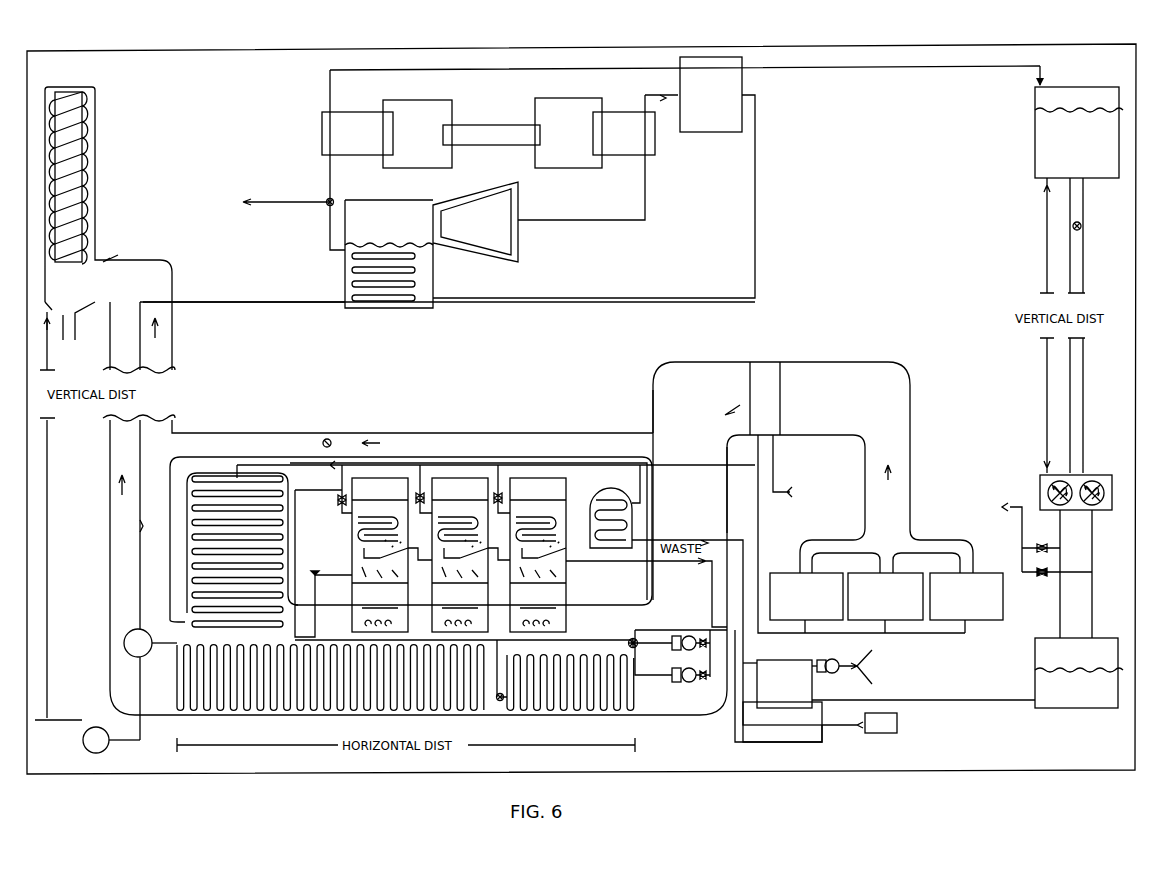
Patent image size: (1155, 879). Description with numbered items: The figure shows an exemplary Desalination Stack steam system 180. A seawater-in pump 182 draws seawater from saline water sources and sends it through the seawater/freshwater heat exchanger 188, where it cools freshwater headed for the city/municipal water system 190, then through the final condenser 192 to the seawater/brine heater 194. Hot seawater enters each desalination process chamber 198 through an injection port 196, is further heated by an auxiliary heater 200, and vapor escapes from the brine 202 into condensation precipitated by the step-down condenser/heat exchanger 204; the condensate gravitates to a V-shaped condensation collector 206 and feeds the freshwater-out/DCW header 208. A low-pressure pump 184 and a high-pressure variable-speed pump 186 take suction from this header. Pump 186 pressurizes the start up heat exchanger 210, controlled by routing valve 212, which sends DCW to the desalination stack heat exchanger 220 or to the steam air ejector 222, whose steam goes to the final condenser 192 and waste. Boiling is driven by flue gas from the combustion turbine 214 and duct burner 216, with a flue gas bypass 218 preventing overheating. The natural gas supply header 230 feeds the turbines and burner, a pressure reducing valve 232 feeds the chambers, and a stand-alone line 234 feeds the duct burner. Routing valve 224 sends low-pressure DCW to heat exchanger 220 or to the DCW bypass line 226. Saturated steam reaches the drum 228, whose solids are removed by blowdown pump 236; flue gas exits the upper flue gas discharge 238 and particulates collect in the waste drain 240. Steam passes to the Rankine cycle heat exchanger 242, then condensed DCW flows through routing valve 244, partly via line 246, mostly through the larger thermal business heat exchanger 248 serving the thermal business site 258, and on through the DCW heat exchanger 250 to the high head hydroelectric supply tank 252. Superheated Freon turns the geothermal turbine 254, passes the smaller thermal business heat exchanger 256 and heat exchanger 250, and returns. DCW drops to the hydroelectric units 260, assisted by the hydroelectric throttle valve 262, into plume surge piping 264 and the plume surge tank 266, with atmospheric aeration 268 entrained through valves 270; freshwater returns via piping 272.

The Desalination Stack steam system 180 is at (841, 42).
The seawater-in pump 182 is at (839, 655).
The low-pressure pump 184 is at (683, 650).
The high-pressure variable-speed pump 186 is at (688, 683).
The seawater/freshwater heat exchanger 188 is at (777, 684).
The city/municipal water system 190 is at (859, 723).
The final condenser 192 is at (614, 502).
The seawater/brine heater 194 is at (198, 484).
The injection port 196 is at (340, 573).
The desalination process chamber 198 is at (352, 606).
The auxiliary heater 200 is at (459, 616).
The brine 202 is at (459, 593).
The step-down condenser/heat exchanger 204 is at (355, 527).
The V-shaped condensation collector 206 is at (562, 556).
The freshwater-out/DCW header 208 is at (590, 562).
The start up heat exchanger 210 is at (586, 713).
The routing valve 212 is at (498, 702).
The combustion turbine 214 is at (886, 596).
The duct burner 216 is at (813, 497).
The flue gas bypass 218 is at (331, 443).
The desalination stack heat exchanger 220 is at (338, 713).
The steam air ejector 222 is at (459, 555).
The routing valve 224 is at (628, 640).
The DCW bypass line 226 is at (736, 735).
The drum 228 is at (150, 643).
The natural gas supply header 230 is at (496, 482).
The pressure reducing valve 232 is at (338, 500).
The stand-alone line 234 is at (797, 467).
The blowdown pump 236 is at (111, 740).
The upper flue gas discharge 238 is at (88, 110).
The waste drain 240 is at (68, 330).
The Rankine cycle heat exchanger 242 is at (350, 266).
The routing valve 244 is at (326, 199).
The line 246 is at (621, 158).
The larger thermal business heat exchanger 248 is at (387, 134).
The DCW heat exchanger 250 is at (594, 177).
The high head hydroelectric supply tank 252 is at (1082, 98).
The geothermal turbine 254 is at (475, 222).
The smaller thermal business heat exchanger 256 is at (595, 133).
The thermal business site 258 is at (491, 135).
The hydroelectric unit 260 is at (1092, 478).
The hydroelectric throttle valve 262 is at (1081, 229).
The plume surge piping 264 is at (1063, 535).
The plume surge tank 266 is at (1079, 673).
The atmospheric aeration 268 is at (993, 536).
The valves 270 is at (1043, 542).
The piping 272 is at (1003, 700).